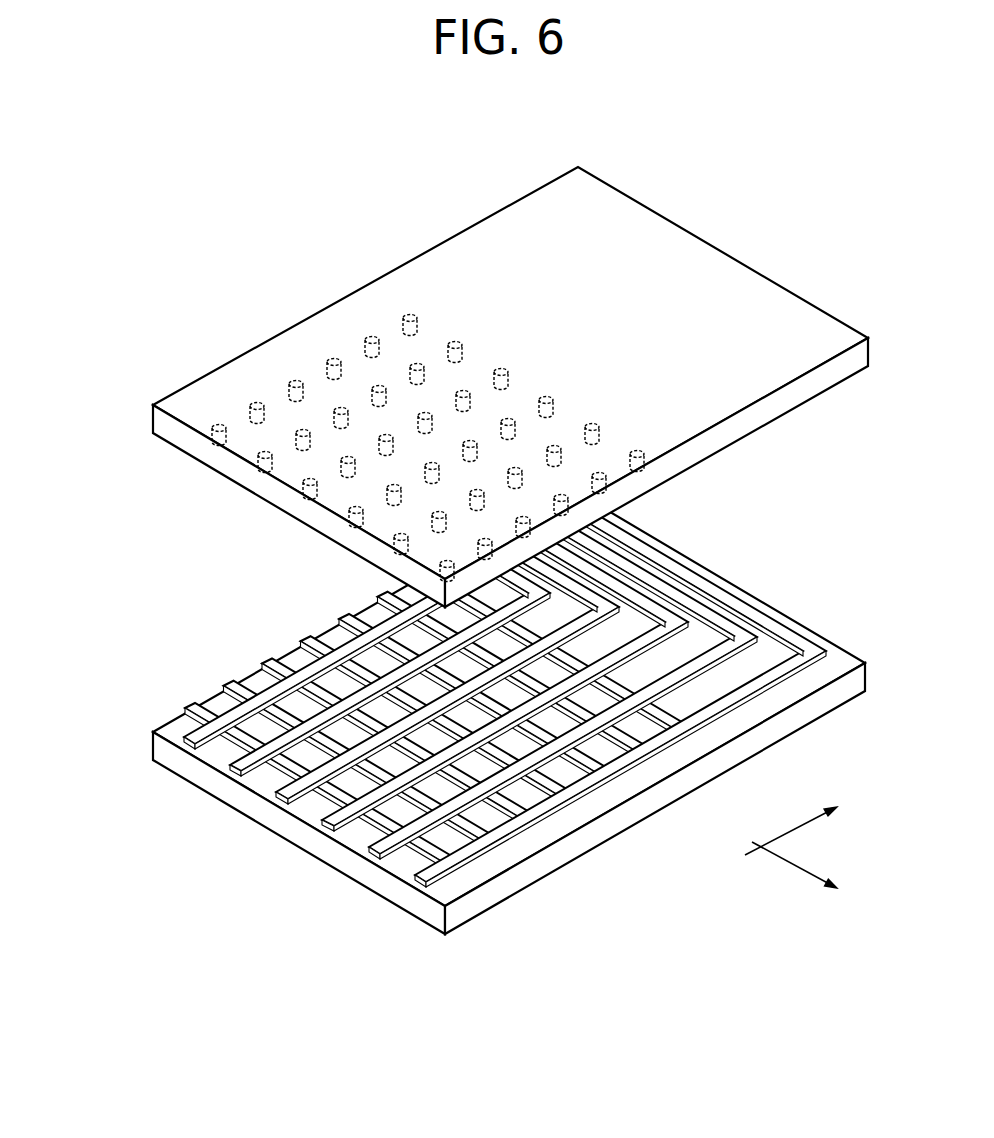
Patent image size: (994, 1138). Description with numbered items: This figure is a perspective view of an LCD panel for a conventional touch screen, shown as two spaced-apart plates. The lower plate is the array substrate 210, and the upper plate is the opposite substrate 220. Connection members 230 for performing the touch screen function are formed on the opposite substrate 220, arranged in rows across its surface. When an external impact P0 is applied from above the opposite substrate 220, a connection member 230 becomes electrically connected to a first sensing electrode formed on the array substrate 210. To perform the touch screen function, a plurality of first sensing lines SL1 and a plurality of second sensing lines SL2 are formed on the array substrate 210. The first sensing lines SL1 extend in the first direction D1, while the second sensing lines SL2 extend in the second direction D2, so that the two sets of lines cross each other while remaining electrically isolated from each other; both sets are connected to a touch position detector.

The array substrate 210 is at (146, 744).
The opposite substrate 220 is at (148, 415).
The connection members 230 is at (248, 408).
The first sensing lines SL1 is at (190, 738).
The second sensing lines SL2 is at (230, 690).
The external impact P0 is at (421, 232).
The first direction D1 is at (806, 820).
The second direction D2 is at (810, 873).